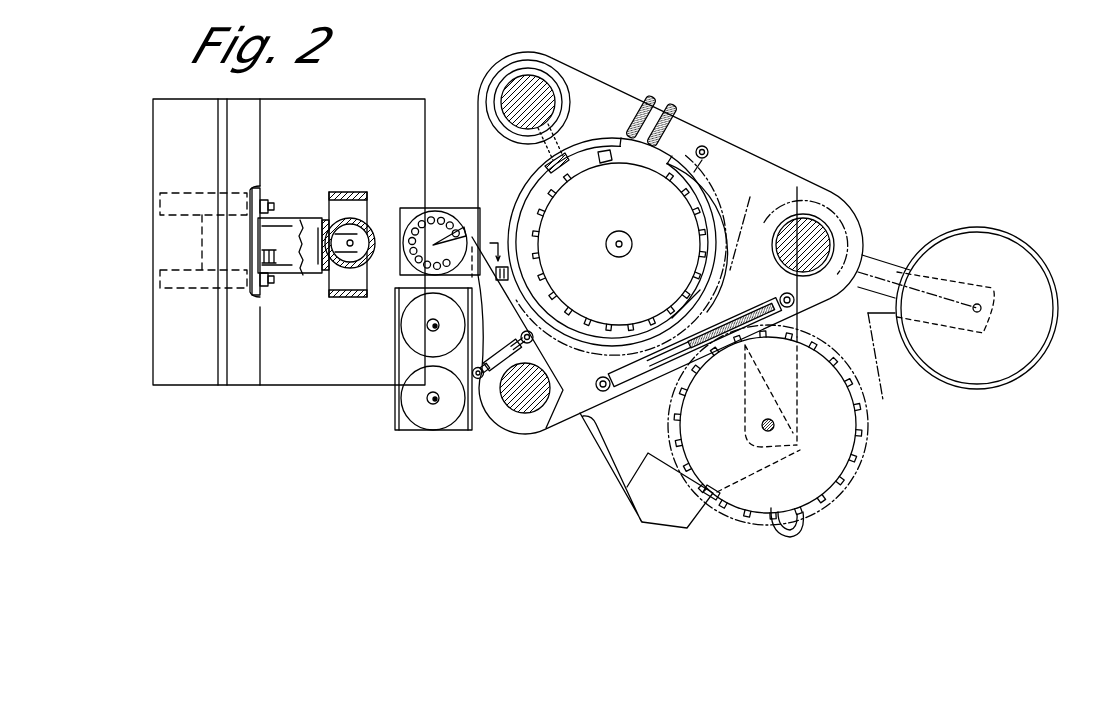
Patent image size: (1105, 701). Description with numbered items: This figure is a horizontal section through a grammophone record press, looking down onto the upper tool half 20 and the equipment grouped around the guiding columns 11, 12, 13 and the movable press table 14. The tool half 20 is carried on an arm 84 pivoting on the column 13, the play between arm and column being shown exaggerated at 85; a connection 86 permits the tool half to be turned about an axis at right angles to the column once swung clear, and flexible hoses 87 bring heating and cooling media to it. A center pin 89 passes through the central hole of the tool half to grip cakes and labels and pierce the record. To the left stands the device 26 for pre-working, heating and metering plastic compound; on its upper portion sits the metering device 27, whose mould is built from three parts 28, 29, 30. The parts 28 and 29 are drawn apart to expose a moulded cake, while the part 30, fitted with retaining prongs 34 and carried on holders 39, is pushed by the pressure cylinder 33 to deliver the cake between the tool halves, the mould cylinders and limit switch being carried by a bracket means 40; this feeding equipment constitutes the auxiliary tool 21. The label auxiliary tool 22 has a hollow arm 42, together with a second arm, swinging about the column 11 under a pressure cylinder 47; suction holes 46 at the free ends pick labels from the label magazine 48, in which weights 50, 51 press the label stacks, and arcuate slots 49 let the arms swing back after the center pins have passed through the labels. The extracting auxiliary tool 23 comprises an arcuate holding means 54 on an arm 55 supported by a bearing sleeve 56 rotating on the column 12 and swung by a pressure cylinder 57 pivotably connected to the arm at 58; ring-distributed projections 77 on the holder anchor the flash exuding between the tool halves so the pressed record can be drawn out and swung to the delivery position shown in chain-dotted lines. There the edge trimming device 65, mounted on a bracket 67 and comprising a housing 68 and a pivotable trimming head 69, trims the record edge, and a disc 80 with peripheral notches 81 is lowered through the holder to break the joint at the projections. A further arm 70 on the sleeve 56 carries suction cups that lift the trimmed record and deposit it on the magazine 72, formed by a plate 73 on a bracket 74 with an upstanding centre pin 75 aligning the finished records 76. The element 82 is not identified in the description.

The guiding column 11 is at (511, 421).
The guiding column 12 is at (790, 228).
The guiding column 13 is at (546, 72).
The press table 14 is at (546, 432).
The tool half 20 is at (682, 136).
The auxiliary tool 21 is at (292, 216).
The auxiliary tool 22 is at (412, 206).
The auxiliary tool 23 is at (718, 184).
The device for pre-working, heating and metering plastic compound 26 is at (378, 94).
The metering device 27 is at (366, 209).
The mould part 28 is at (365, 262).
The mould part 29 is at (362, 297).
The mould part 30 is at (302, 274).
The pressure cylinder 33 is at (203, 241).
The retaining prongs 34 is at (326, 222).
The holders 39 is at (268, 200).
The bracket means 40 is at (343, 298).
The arm 42 is at (540, 299).
The holes 46 is at (455, 249).
The pressure cylinder 47 is at (509, 351).
The label magazine 48 is at (394, 401).
The arcuate slots 49 is at (440, 232).
The weight 50 is at (400, 326).
The weight 51 is at (427, 430).
The holding means 54 is at (604, 149).
The arm 55 is at (748, 187).
The bearing sleeve 56 is at (845, 228).
The pressure cylinder 57 is at (601, 378).
The pivot connection 58 is at (778, 299).
The edge trimming device 65 is at (610, 471).
The bracket 67 is at (628, 500).
The housing 68 is at (641, 522).
The trimming head 69 is at (700, 500).
The arm 70 is at (800, 324).
The magazine 72 is at (1004, 230).
The plate 73 is at (965, 229).
The bracket 74 is at (904, 265).
The centre pin 75 is at (982, 307).
The grammophone records 76 is at (1040, 261).
The projections 77 is at (679, 305).
The disc 80 is at (856, 483).
The notches 81 is at (806, 531).
The drum axle 82 is at (777, 423).
The arm 84 is at (573, 96).
The play 85 is at (505, 88).
The connection 86 is at (546, 158).
The flexible hoses 87 is at (664, 101).
The center pin 89 is at (619, 241).